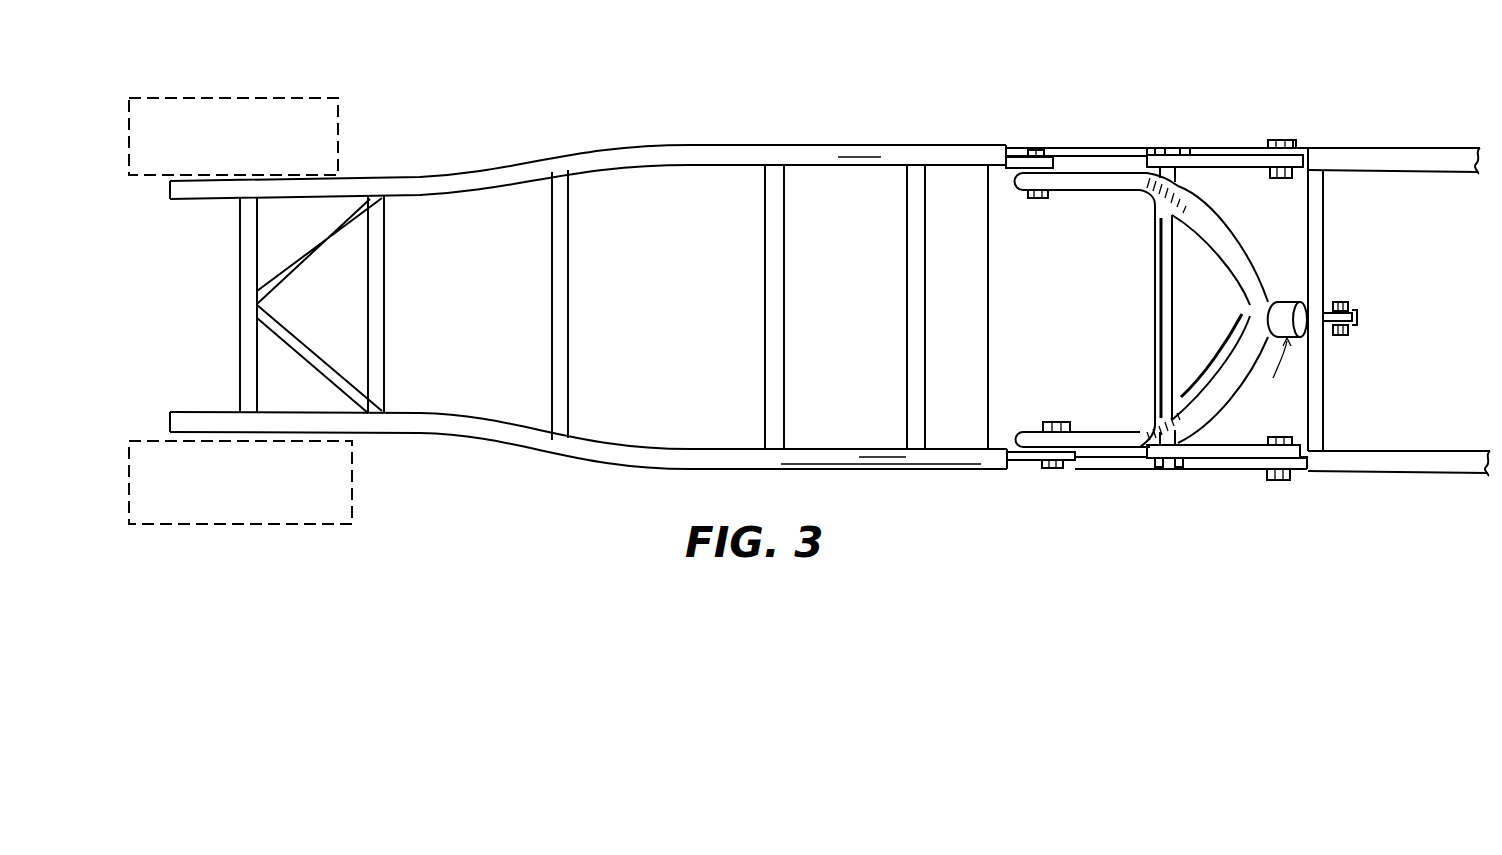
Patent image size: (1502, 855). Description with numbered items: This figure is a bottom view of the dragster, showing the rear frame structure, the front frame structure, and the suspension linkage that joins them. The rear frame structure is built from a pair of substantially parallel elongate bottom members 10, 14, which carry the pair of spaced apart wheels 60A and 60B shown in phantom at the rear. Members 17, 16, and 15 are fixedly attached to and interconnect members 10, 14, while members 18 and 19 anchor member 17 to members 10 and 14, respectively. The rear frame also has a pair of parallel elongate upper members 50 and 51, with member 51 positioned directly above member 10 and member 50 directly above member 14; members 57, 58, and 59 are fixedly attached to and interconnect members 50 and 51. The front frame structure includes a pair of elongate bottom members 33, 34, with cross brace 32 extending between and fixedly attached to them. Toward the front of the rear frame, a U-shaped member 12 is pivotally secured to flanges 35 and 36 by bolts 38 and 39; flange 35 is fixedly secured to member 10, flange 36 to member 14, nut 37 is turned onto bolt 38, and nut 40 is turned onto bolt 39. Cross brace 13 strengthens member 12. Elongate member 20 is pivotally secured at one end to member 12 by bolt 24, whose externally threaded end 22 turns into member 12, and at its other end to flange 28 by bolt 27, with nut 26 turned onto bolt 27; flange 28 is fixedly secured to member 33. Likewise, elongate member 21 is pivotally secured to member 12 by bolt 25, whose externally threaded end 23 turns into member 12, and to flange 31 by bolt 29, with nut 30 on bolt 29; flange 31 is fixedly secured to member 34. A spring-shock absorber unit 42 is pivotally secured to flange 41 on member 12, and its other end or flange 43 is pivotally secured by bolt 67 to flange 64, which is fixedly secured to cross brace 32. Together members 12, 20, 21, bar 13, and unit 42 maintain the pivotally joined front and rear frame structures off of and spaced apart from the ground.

The elongate bottom member 10 is at (525, 160).
The elongate bottom member 14 is at (628, 466).
The interconnecting member 17 is at (249, 240).
The anchor member 18 is at (345, 232).
The anchor member 19 is at (295, 341).
The interconnecting member 57 is at (385, 232).
The interconnecting member 58 is at (568, 241).
The interconnecting member 16 is at (784, 236).
The interconnecting member 59 is at (907, 228).
The interconnecting member 15 is at (995, 230).
The wheel 60A is at (352, 482).
The wheel 60B is at (343, 125).
The flange 35 is at (1013, 153).
The flange 36 is at (1010, 468).
The nut 37 is at (1034, 150).
The bolt 38 is at (1040, 198).
The bolt 39 is at (1057, 422).
The nut 40 is at (1058, 468).
The elongate upper member 51 is at (1068, 155).
The U-shaped member 12 is at (1098, 175).
The cross brace 13 is at (1155, 232).
The elongate member 20 is at (1240, 160).
The elongate member 21 is at (1197, 458).
The externally threaded end 22 is at (1177, 180).
The externally threaded end 23 is at (1180, 438).
The bolt 24 is at (1165, 150).
The bolt 25 is at (1165, 462).
The nut 26 is at (1283, 140).
The bolt 27 is at (1280, 178).
The flange 28 is at (1297, 148).
The bolt 29 is at (1280, 437).
The nut 30 is at (1278, 480).
The flange 31 is at (1305, 470).
The cross brace 32 is at (1322, 228).
The elongate bottom member 33 is at (1362, 150).
The elongate bottom member 34 is at (1402, 451).
The flange 41 is at (1271, 308).
The spring-shock absorber unit 42 is at (1270, 370).
The end flange 43 is at (1355, 312).
The flange 64 is at (1358, 318).
The bolt 67 is at (1341, 302).
The elongate upper member 50 is at (1105, 460).